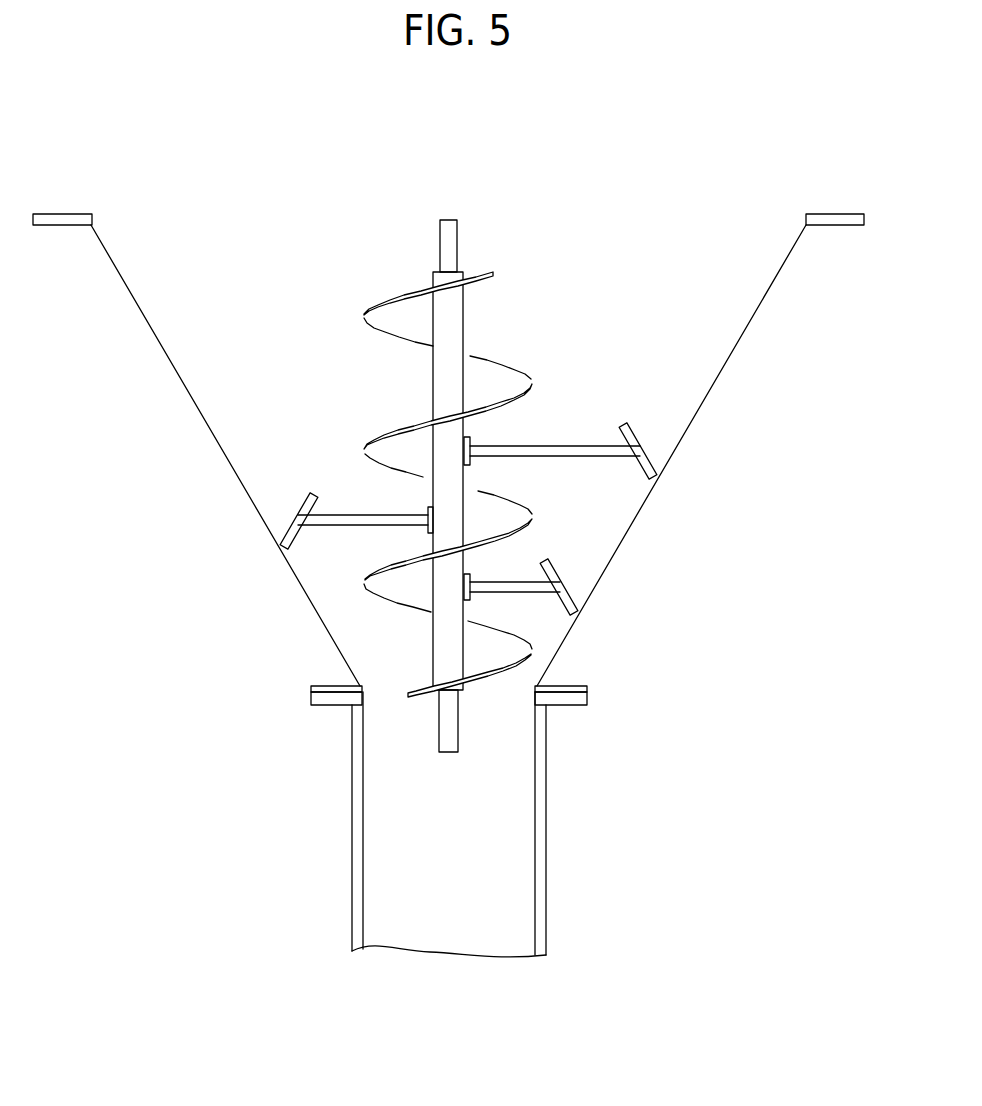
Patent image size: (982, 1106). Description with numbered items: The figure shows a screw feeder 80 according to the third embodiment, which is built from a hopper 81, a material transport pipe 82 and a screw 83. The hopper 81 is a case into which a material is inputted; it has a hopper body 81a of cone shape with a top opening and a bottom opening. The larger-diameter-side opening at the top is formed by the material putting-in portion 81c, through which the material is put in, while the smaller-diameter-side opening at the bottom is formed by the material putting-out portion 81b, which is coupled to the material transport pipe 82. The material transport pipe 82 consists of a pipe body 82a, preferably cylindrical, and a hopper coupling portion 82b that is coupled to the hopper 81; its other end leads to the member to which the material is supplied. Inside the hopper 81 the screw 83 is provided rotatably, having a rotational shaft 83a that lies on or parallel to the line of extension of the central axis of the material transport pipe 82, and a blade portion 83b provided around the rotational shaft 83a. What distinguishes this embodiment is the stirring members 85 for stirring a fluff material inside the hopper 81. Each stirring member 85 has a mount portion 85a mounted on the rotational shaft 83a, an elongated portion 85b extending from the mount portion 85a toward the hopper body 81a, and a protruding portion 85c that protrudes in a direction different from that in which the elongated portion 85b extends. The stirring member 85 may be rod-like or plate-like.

The screw feeder 80 is at (702, 185).
The hopper 81 is at (763, 368).
The hopper body 81a is at (657, 469).
The material putting-out portion 81b is at (585, 686).
The material putting-in portion 81c is at (835, 225).
The material transport pipe 82 is at (687, 724).
The pipe body 82a is at (543, 878).
The hopper coupling portion 82b is at (585, 705).
The screw 83 is at (498, 348).
The rotational shaft 83a is at (452, 236).
The blade portion 83b is at (532, 383).
The stirring member 85 is at (633, 402).
The mount portion 85a is at (469, 441).
The elongated portion 85b is at (560, 458).
The protruding portion 85c is at (648, 432).